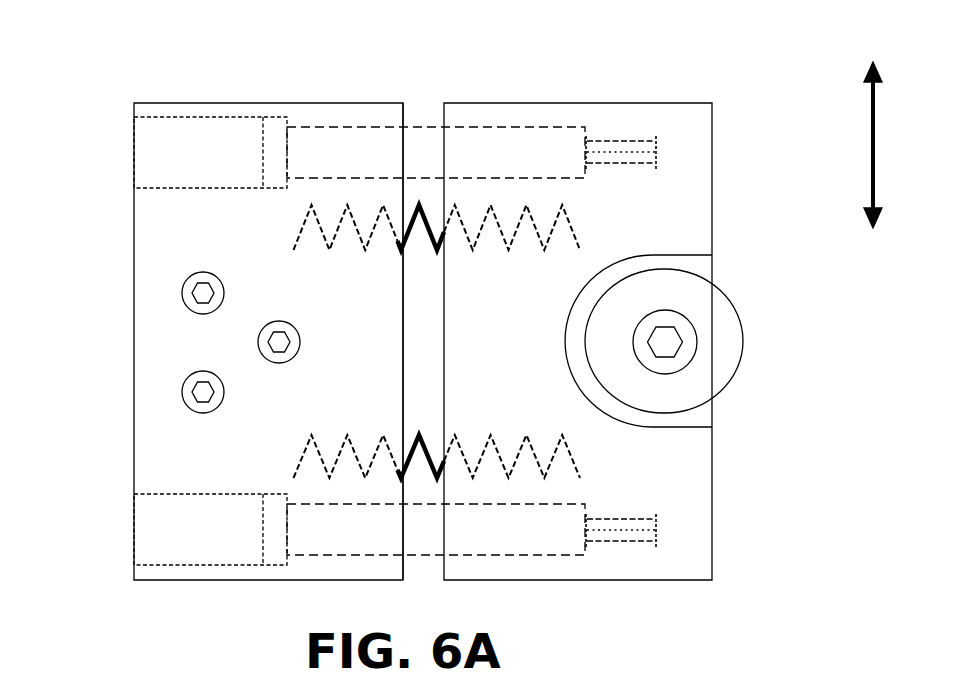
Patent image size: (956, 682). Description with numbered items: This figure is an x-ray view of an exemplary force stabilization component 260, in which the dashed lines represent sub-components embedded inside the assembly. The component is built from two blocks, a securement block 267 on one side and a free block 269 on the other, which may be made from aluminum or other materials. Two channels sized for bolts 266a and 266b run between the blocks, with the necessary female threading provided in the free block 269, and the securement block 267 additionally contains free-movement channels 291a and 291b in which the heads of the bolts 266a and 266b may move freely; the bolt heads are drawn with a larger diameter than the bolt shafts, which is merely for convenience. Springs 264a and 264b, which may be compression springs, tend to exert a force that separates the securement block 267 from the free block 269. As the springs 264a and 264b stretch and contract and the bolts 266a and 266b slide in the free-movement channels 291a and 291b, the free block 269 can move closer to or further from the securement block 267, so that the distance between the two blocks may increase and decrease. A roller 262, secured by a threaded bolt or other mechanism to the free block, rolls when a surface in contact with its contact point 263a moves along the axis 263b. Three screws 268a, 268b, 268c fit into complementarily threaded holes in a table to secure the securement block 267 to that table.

The force stabilization component 260 is at (104, 86).
The roller 262 is at (715, 335).
The contact point 263a is at (755, 337).
The axis 263b is at (864, 115).
The spring 264a is at (568, 225).
The spring 264b is at (573, 468).
The bolt 266a is at (563, 148).
The bolt 266b is at (513, 527).
The securement block 267 is at (153, 212).
The screw 268a is at (190, 290).
The screw 268b is at (268, 343).
The screw 268c is at (190, 392).
The free block 269 is at (680, 509).
The free-movement channel 291a is at (185, 148).
The free-movement channel 291b is at (197, 510).